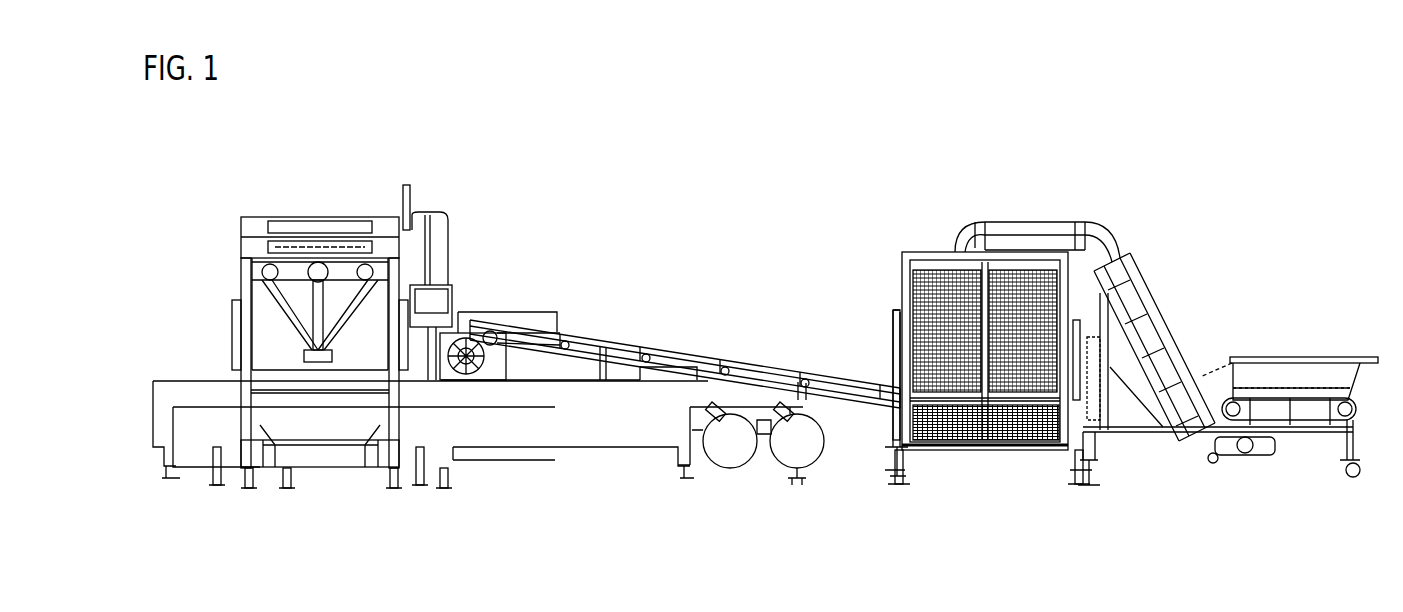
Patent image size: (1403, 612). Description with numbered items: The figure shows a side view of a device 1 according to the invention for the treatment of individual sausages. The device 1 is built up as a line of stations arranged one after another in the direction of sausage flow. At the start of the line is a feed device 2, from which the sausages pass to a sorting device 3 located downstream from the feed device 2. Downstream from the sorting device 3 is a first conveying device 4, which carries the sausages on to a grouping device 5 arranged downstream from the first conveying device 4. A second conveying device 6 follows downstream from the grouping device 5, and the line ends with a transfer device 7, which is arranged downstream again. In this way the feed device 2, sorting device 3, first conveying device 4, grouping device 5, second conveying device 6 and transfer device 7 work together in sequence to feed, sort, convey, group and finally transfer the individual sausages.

The device 1 is at (683, 180).
The feed device 2 is at (1202, 338).
The sorting device 3 is at (1000, 462).
The first conveying device 4 is at (767, 342).
The grouping device 5 is at (500, 392).
The second conveying device 6 is at (463, 390).
The transfer device 7 is at (318, 207).